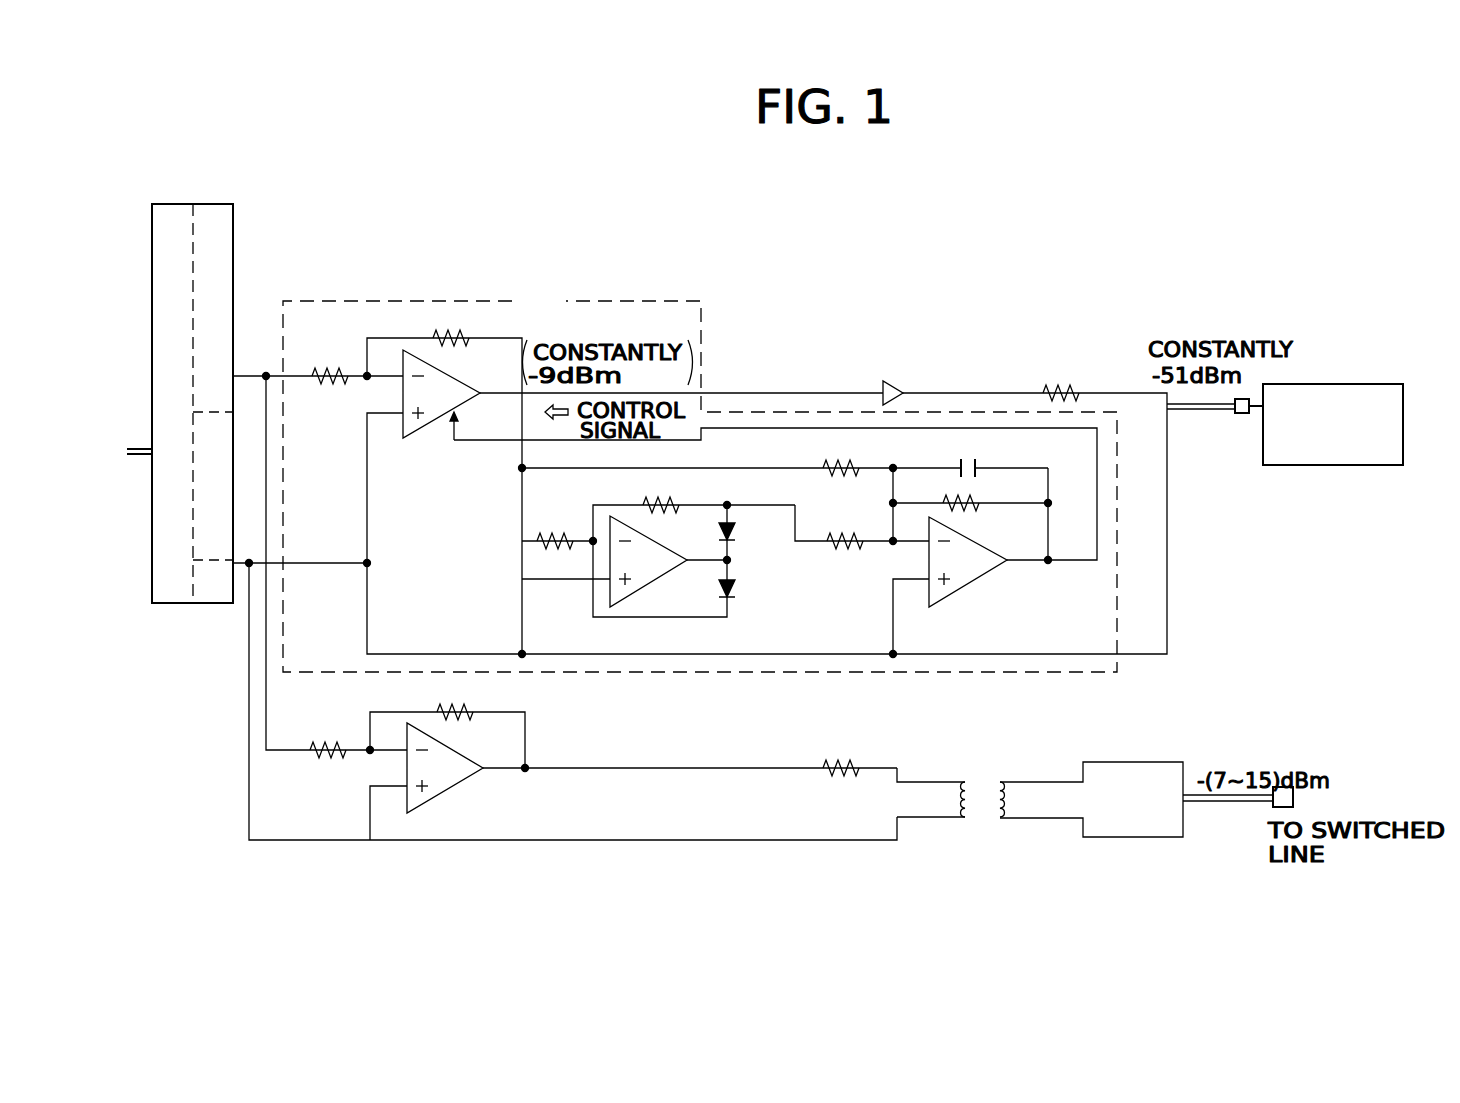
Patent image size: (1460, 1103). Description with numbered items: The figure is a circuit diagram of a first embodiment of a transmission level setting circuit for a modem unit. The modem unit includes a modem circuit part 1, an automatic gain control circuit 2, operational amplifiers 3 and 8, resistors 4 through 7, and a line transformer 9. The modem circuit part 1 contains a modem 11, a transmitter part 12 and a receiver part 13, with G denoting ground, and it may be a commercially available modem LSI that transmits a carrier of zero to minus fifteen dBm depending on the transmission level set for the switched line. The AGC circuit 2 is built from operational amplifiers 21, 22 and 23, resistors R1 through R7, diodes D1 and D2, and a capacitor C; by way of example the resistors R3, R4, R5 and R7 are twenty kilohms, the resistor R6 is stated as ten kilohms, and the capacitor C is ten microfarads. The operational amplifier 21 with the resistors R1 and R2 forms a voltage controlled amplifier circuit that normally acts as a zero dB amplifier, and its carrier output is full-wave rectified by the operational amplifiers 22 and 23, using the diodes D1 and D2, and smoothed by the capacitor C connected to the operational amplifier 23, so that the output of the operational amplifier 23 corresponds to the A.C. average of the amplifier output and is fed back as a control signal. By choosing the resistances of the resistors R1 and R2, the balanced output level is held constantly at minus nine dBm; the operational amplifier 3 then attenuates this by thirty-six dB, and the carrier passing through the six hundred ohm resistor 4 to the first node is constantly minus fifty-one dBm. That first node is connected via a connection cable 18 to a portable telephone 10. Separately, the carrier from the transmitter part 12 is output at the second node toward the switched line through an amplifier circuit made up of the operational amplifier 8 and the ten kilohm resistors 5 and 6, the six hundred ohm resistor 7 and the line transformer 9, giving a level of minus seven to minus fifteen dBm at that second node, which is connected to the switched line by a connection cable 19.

The modem circuit part 1 is at (199, 603).
The automatic gain control (AGC) circuit 2 is at (640, 300).
The operational amplifier 3 is at (883, 383).
The resistor 4 is at (1141, 390).
The resistor 5 is at (328, 779).
The resistor 6 is at (479, 740).
The resistor 7 is at (846, 794).
The operational amplifier 8 is at (448, 790).
The line transformer 9 is at (982, 812).
The portable telephone 10 is at (1323, 466).
The modem 11 is at (154, 518).
The transmitter part 12 is at (226, 306).
The receiver part 13 is at (226, 487).
The connection cable 18 is at (1200, 411).
The connection cable 19 is at (1230, 804).
The operational amplifier 21 is at (428, 425).
The operational amplifier 22 is at (660, 578).
The operational amplifier 23 is at (975, 590).
The resistor R1 is at (330, 364).
The resistor R2 is at (451, 327).
The resistor R3 is at (551, 545).
The resistor R4 is at (670, 507).
The resistor R5 is at (845, 471).
The resistor R6 is at (853, 550).
The resistor R7 is at (972, 509).
The diode D1 is at (748, 536).
The diode D2 is at (751, 592).
The capacitor C is at (956, 462).